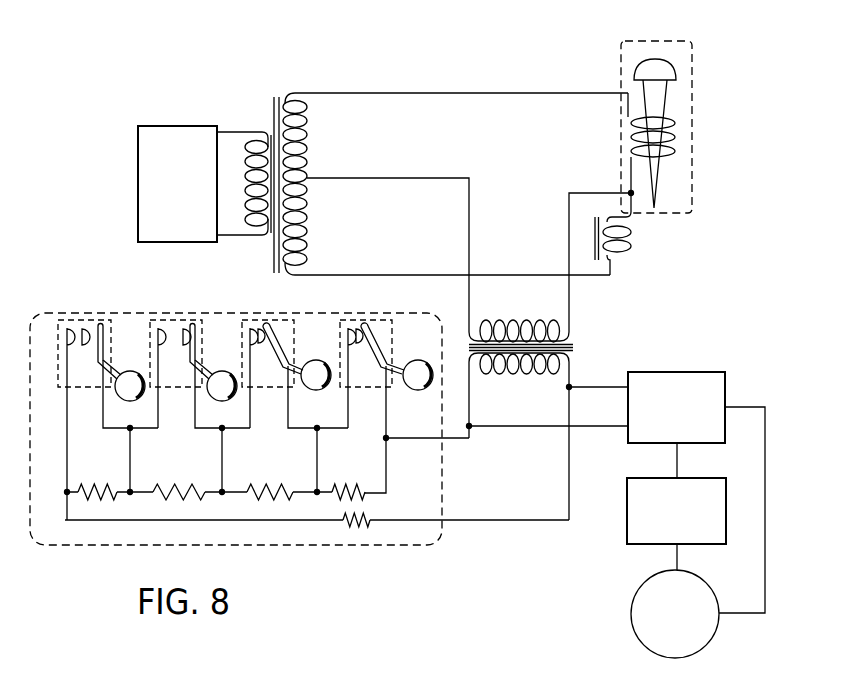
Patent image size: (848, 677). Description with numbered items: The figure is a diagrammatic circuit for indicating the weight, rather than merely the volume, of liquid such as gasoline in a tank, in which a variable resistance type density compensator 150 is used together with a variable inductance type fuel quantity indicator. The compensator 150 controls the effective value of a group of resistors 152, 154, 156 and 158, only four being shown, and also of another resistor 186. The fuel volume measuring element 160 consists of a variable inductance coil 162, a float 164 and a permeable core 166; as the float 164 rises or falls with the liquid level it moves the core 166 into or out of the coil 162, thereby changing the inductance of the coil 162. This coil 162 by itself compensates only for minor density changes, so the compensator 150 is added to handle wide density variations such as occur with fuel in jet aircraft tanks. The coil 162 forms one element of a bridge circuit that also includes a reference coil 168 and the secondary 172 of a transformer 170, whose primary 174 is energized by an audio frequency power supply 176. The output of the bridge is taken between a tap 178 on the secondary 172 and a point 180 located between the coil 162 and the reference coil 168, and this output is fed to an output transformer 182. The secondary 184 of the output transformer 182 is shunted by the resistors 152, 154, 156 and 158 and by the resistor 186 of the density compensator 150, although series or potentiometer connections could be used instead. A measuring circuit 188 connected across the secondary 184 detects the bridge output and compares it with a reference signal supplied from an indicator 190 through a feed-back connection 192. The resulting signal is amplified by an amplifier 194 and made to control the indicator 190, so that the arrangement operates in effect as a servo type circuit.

The density compensator 150 is at (137, 310).
The resistor 152 is at (92, 490).
The resistor 154 is at (178, 490).
The resistor 156 is at (272, 490).
The resistor 158 is at (347, 490).
The fuel volume measuring element 160 is at (620, 53).
The variable inductance coil 162 is at (675, 137).
The float 164 is at (670, 72).
The permeable core 166 is at (657, 170).
The reference coil 168 is at (632, 240).
The transformer 170 is at (275, 92).
The secondary 172 is at (307, 147).
The primary 174 is at (245, 183).
The audio frequency power supply 176 is at (138, 155).
The tap 178 is at (306, 177).
The point 180 is at (630, 192).
The output transformer 182 is at (573, 342).
The secondary 184 is at (518, 373).
The resistor 186 is at (365, 528).
The measuring circuit 188 is at (682, 372).
The indicator 190 is at (635, 592).
The feed-back connection 192 is at (765, 480).
The amplifier 194 is at (627, 492).